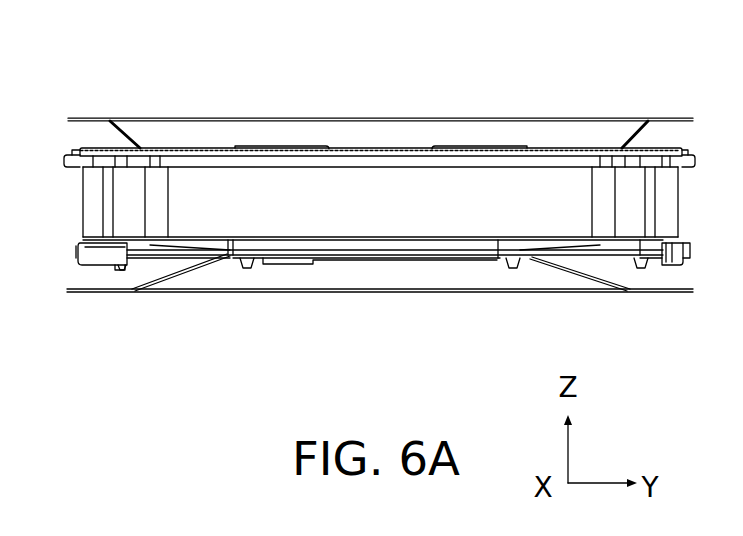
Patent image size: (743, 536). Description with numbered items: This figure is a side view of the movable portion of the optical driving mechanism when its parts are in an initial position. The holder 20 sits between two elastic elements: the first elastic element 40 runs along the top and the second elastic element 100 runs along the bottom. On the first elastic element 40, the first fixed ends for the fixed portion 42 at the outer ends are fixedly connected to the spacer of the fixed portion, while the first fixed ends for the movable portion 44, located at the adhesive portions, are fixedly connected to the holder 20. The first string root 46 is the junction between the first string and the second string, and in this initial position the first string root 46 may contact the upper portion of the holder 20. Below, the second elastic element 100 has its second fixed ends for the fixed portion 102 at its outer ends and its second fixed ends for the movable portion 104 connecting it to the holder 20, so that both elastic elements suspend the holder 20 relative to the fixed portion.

The holder 20 is at (694, 140).
The first elastic element 40 is at (386, 92).
The first fixed ends for the fixed portion 42 is at (93, 118).
The first fixed ends for the movable portion 44 is at (275, 148).
The first string root 46 is at (156, 148).
The second elastic element 100 is at (410, 310).
The second fixed ends for the fixed portion 102 is at (133, 295).
The second fixed ends for the movable portion 104 is at (247, 277).